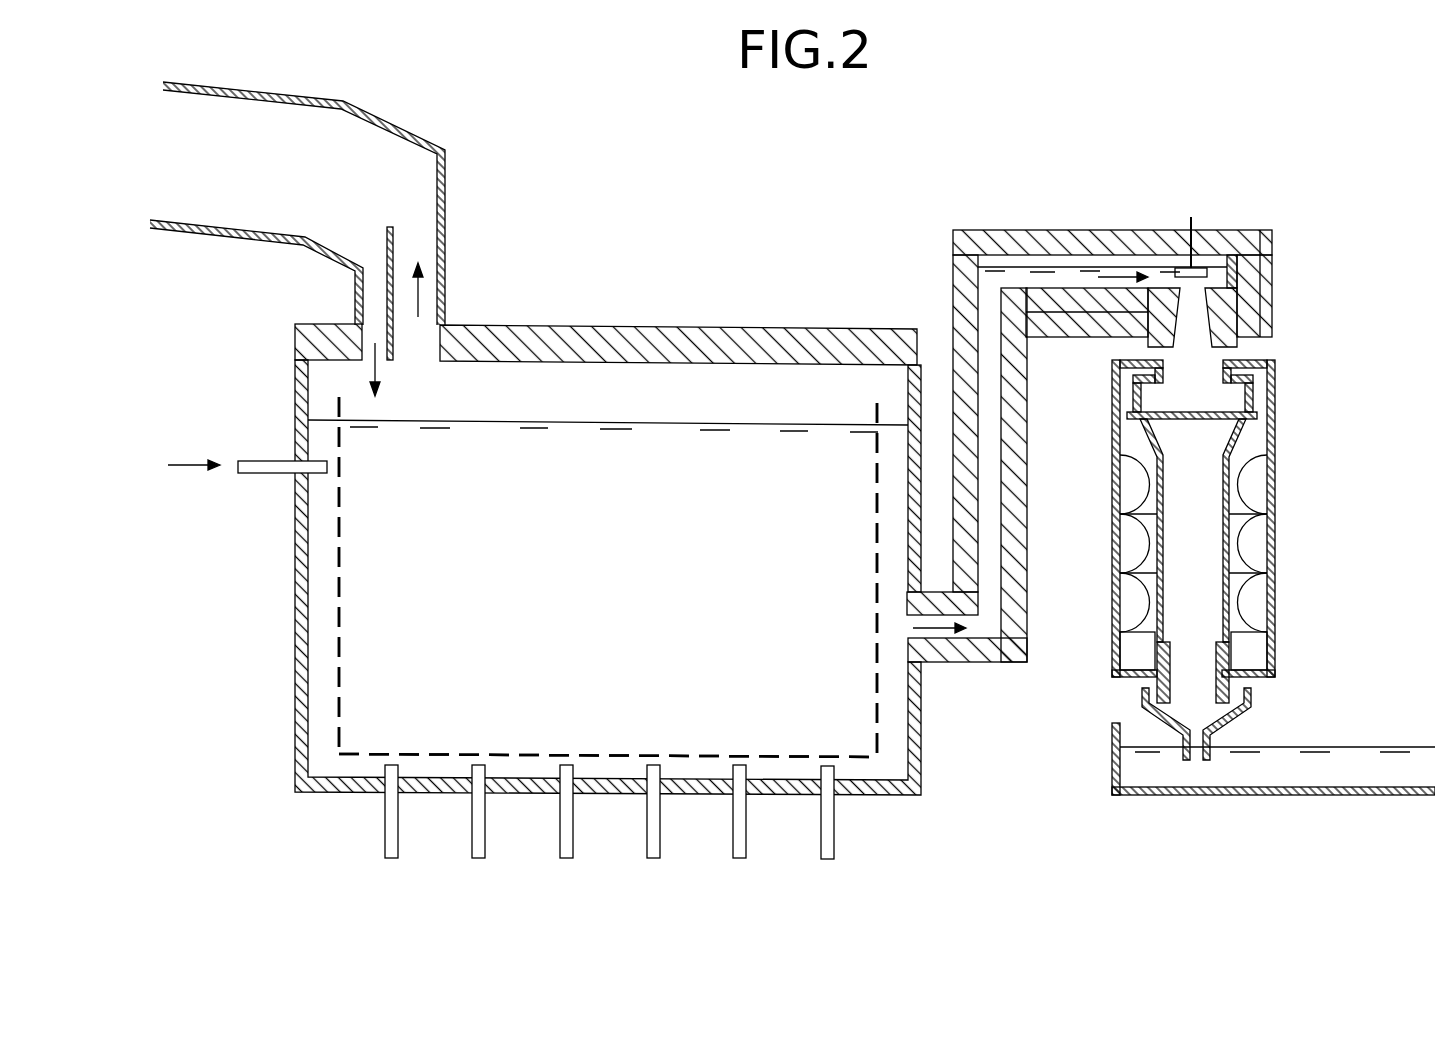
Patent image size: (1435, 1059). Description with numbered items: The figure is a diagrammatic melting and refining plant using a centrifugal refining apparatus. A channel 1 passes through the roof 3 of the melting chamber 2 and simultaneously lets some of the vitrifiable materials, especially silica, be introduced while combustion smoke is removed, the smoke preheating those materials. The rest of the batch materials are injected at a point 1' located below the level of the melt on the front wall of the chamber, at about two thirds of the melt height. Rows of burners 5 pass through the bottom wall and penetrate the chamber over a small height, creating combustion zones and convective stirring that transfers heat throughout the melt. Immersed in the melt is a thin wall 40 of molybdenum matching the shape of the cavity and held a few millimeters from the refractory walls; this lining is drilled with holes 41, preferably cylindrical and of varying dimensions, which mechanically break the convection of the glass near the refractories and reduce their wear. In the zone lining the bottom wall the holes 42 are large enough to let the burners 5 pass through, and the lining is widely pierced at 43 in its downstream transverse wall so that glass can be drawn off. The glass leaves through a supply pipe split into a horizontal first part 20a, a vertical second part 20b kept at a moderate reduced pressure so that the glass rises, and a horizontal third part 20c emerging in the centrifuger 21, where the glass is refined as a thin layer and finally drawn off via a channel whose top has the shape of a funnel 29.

The channel 1 is at (324, 239).
The injection point 1' is at (247, 496).
The melting chamber 2 is at (806, 310).
The roof 3 is at (581, 330).
The burners 5 is at (486, 842).
The horizontal first part of supply pipe 20a is at (963, 660).
The vertical second part of supply pipe 20b is at (1027, 522).
The horizontal third part of supply pipe 20c is at (1078, 233).
The centrifuger 21 is at (1292, 490).
The funnel 29 is at (1233, 731).
The thin wall of molybdenum 40 is at (343, 583).
The holes 41 is at (340, 466).
The holes 42 is at (478, 752).
The wide piercing 43 is at (874, 622).